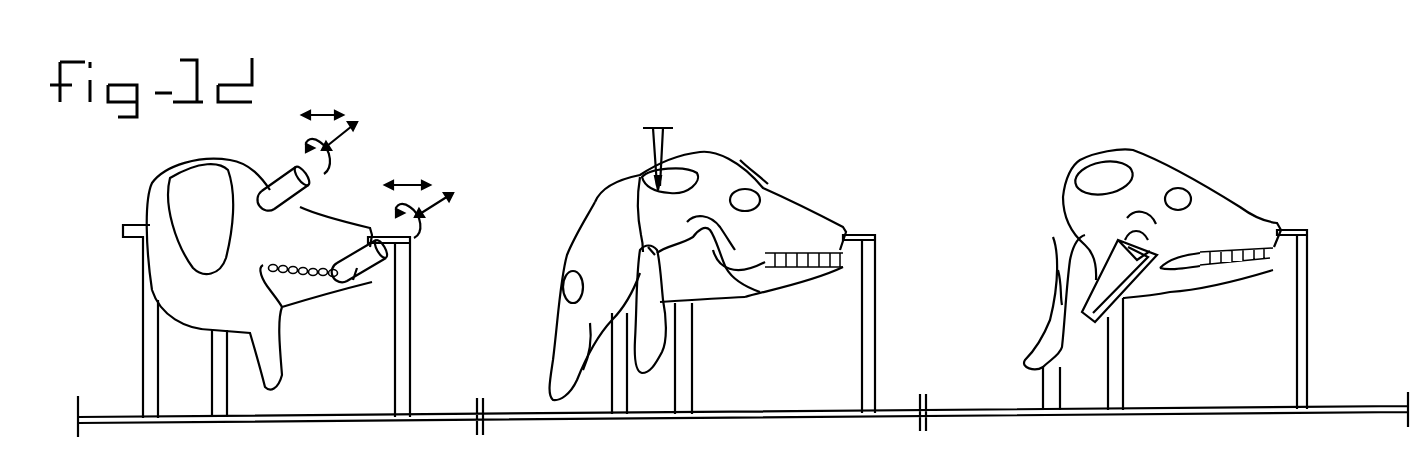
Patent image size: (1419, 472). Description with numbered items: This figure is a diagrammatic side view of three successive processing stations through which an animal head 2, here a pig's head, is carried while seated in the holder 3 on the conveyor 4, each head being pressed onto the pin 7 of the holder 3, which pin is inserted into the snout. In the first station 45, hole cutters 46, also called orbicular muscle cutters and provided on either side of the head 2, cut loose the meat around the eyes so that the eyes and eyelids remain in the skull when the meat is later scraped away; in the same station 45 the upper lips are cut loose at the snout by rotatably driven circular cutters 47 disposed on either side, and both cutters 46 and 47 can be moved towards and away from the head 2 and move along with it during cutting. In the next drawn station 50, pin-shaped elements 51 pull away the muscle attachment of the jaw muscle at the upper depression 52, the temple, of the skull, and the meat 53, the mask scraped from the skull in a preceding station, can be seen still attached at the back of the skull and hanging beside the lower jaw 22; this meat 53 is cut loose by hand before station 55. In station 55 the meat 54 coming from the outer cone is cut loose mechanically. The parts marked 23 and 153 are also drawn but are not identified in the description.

The animal head 2 is at (190, 288).
The holder 3 is at (1332, 313).
The conveyor 4 is at (698, 415).
The pin 7 is at (857, 233).
The lower jaw 22 is at (703, 280).
The cheek meat 23 is at (190, 205).
The station 45 is at (372, 172).
The hole cutters 46 is at (283, 180).
The circular cutters 47 is at (360, 287).
The station 50 is at (703, 128).
The pin-shaped elements 51 is at (656, 142).
The upper depression 52 is at (730, 165).
The meat 53 is at (612, 230).
The meat 54 is at (1127, 283).
The station 55 is at (1151, 131).
The hanging tissue piece 153 is at (642, 374).